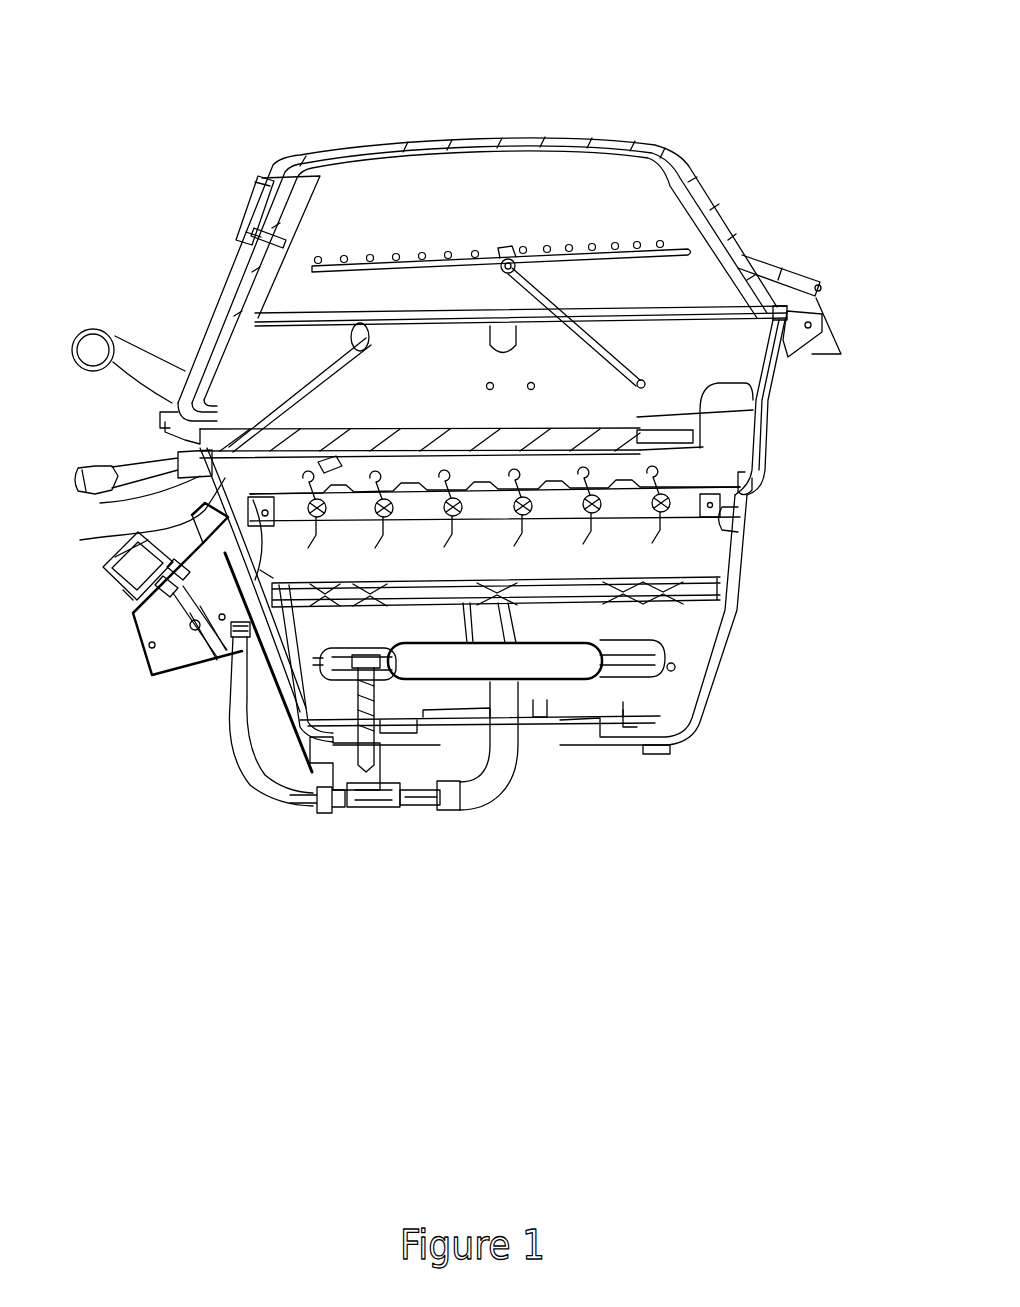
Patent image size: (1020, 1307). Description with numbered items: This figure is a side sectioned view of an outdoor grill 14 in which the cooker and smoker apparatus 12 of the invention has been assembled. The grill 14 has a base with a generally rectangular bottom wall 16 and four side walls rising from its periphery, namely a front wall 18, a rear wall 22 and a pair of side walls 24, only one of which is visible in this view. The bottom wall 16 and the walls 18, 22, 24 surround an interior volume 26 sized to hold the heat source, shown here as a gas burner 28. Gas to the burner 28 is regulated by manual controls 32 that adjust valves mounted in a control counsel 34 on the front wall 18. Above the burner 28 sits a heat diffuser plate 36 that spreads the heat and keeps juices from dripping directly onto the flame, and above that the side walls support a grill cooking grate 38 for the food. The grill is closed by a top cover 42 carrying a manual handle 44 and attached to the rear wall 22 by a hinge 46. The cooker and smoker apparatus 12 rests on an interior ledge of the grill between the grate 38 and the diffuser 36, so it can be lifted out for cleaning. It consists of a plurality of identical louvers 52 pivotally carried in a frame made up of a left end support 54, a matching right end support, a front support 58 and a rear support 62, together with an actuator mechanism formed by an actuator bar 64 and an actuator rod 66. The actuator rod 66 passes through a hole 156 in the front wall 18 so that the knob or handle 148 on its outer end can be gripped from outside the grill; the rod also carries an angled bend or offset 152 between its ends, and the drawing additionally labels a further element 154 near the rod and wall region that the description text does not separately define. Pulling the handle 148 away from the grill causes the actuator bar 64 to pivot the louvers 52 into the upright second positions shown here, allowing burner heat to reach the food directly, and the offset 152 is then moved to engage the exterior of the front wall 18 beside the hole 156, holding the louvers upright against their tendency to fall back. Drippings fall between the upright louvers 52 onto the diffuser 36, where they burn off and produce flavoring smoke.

The cooker and smoker apparatus 12 is at (540, 466).
The outdoor grill 14 is at (650, 136).
The bottom wall 16 is at (568, 748).
The front wall 18 is at (88, 540).
The rear wall 22 is at (773, 437).
The side wall 24 is at (713, 345).
The interior volume 26 is at (688, 552).
The gas burner 28 is at (642, 650).
The manual controls 32 is at (140, 582).
The control counsel 34 is at (142, 647).
The heat diffuser plate 36 is at (723, 576).
The grill cooking grate 38 is at (707, 407).
The top cover 42 is at (424, 142).
The manual handle 44 is at (90, 330).
The hinge 46 is at (826, 357).
The louvers 52 is at (530, 556).
The left end support 54 is at (490, 514).
The front support 58 is at (215, 660).
The rear support 62 is at (745, 527).
The actuator bar 64 is at (355, 467).
The actuator rod 66 is at (172, 408).
The handle 148 is at (85, 469).
The offset 152 is at (100, 503).
The mounting bracket 154 is at (150, 505).
The hole 156 is at (180, 450).